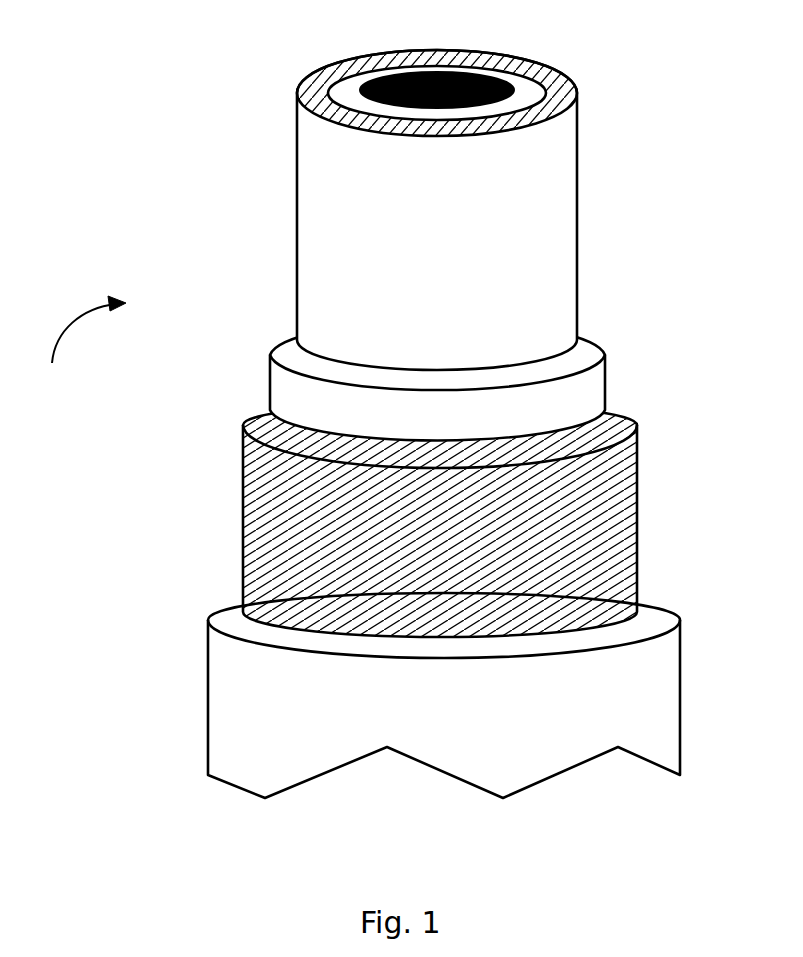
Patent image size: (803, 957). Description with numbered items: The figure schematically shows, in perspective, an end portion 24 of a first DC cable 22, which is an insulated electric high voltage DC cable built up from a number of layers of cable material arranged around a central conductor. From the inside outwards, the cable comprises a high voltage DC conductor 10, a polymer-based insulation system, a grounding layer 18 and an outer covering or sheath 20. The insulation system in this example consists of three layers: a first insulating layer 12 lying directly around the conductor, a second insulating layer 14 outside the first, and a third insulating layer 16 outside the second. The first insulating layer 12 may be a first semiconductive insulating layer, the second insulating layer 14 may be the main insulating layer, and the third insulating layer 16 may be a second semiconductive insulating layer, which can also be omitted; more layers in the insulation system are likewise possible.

The high voltage DC conductor 10 is at (458, 72).
The first insulating layer 12 is at (532, 90).
The second insulating layer 14 is at (577, 88).
The third insulating layer 16 is at (605, 377).
The grounding layer 18 is at (637, 492).
The outer covering or sheath 20 is at (680, 653).
The DC cable 22 is at (118, 521).
The end portion 24 is at (82, 348).